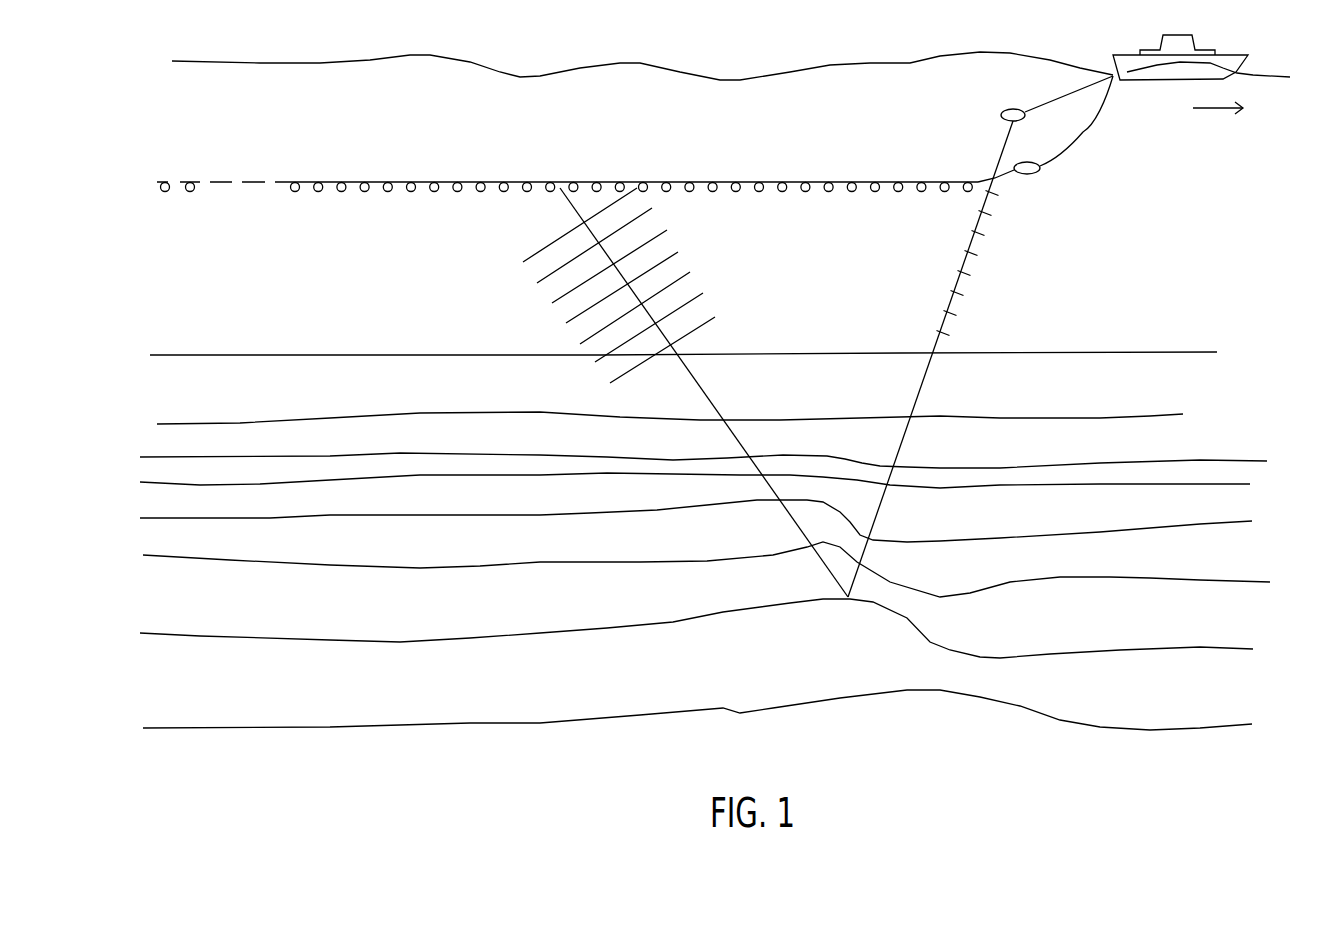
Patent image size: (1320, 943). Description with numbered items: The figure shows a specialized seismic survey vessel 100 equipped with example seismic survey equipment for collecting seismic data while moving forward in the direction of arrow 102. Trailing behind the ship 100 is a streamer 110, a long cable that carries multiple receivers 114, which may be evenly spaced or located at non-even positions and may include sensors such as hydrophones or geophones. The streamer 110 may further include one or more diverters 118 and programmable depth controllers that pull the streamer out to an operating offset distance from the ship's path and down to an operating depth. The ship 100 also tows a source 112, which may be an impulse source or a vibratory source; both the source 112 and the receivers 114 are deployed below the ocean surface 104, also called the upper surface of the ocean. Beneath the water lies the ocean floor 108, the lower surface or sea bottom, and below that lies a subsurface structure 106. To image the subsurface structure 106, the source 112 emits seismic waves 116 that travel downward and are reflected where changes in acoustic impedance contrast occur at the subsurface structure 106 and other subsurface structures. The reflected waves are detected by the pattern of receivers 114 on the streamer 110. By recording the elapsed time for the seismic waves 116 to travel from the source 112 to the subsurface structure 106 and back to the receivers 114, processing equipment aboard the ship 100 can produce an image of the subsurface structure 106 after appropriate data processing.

The vessel 100 is at (1160, 42).
The arrow 102 is at (1238, 108).
The ocean surface 104 is at (725, 82).
The subsurface structure 106 is at (900, 617).
The ocean floor 108 is at (1128, 352).
The streamer 110 is at (1083, 132).
The source 112 is at (1001, 113).
The receivers 114 is at (338, 192).
The seismic waves 116 is at (962, 300).
The diverter 118 is at (1030, 175).